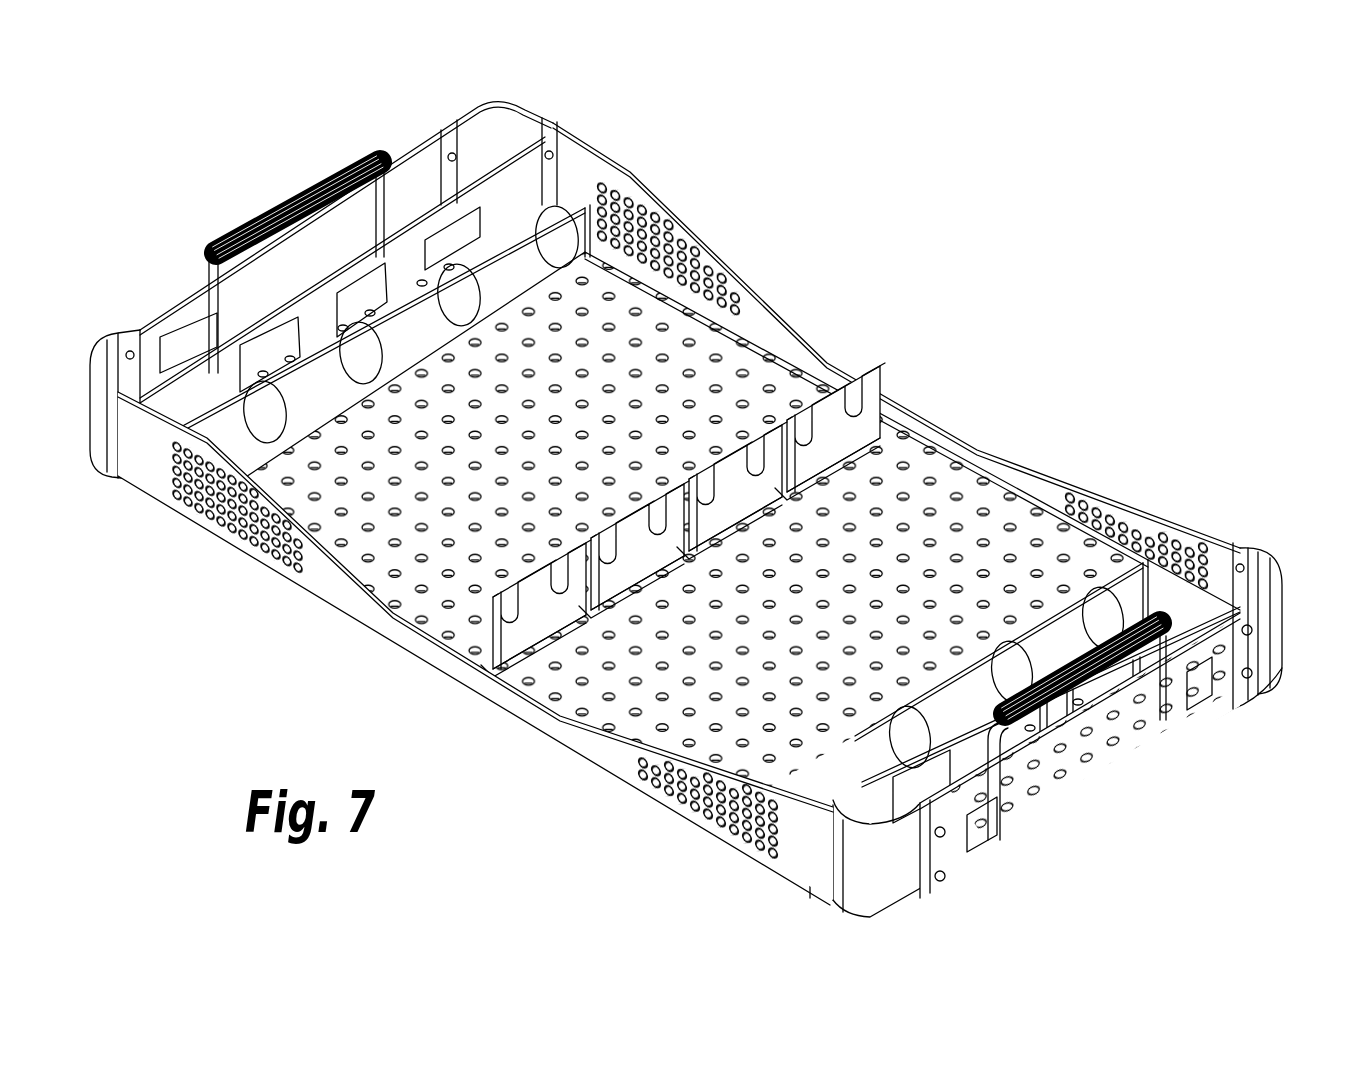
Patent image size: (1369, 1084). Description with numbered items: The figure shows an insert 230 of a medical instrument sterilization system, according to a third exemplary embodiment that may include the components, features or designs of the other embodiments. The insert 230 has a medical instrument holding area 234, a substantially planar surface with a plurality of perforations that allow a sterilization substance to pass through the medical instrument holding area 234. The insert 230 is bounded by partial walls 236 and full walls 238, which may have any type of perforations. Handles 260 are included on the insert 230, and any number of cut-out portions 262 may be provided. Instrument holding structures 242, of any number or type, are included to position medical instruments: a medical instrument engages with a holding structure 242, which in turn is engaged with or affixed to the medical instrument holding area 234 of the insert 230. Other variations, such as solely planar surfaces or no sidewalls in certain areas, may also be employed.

The insert 230 is at (905, 225).
The medical instrument holding area 234 is at (689, 384).
The partial walls 236 is at (950, 455).
The full walls 238 is at (800, 814).
The instrument holding structures 242 is at (840, 413).
The handles 260 is at (300, 195).
The cut-out portions 262 is at (1040, 797).